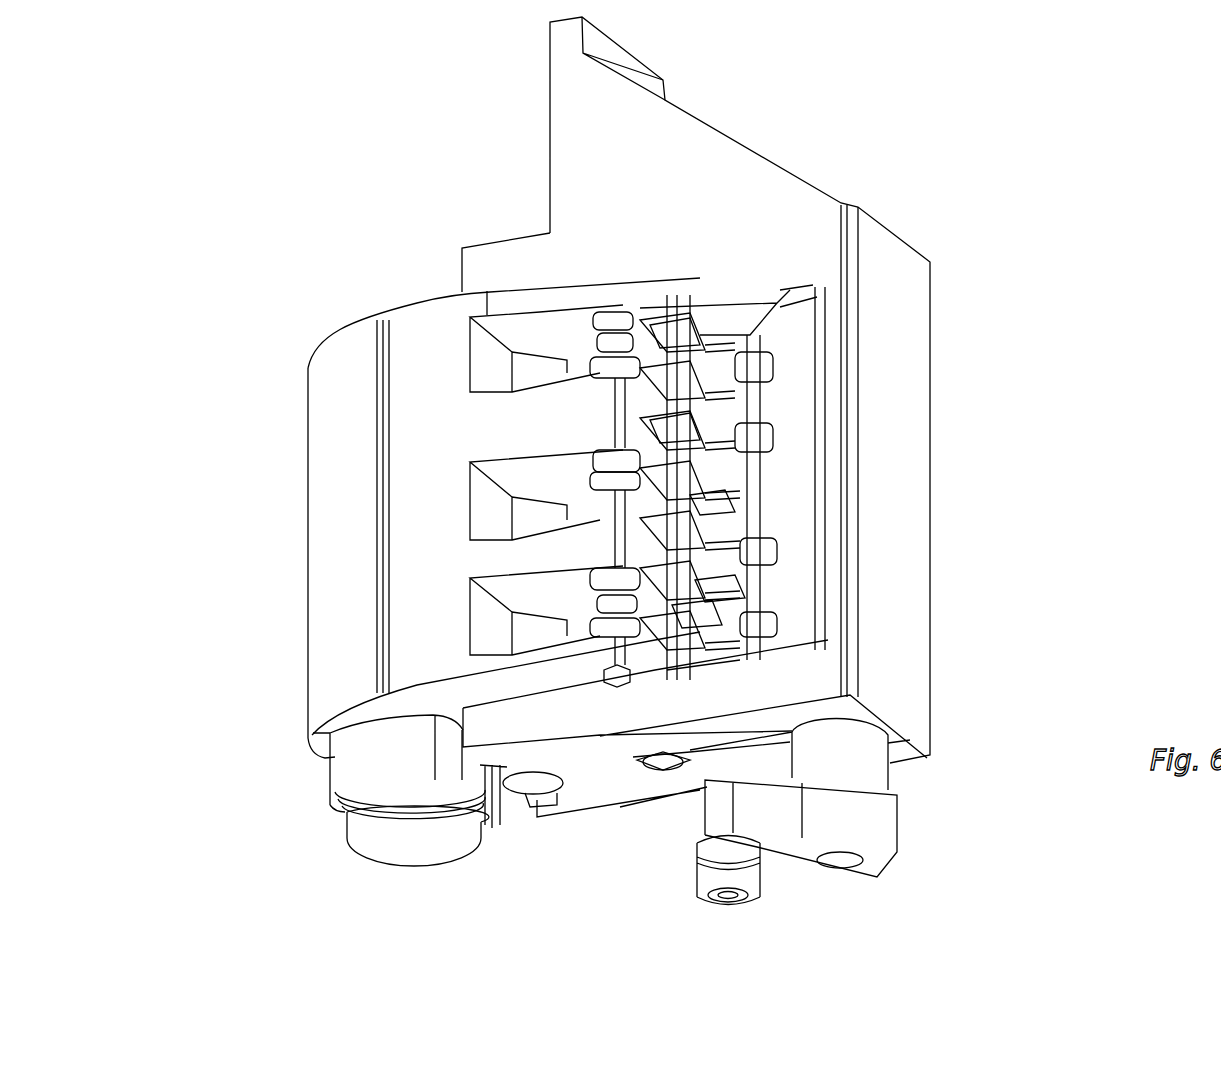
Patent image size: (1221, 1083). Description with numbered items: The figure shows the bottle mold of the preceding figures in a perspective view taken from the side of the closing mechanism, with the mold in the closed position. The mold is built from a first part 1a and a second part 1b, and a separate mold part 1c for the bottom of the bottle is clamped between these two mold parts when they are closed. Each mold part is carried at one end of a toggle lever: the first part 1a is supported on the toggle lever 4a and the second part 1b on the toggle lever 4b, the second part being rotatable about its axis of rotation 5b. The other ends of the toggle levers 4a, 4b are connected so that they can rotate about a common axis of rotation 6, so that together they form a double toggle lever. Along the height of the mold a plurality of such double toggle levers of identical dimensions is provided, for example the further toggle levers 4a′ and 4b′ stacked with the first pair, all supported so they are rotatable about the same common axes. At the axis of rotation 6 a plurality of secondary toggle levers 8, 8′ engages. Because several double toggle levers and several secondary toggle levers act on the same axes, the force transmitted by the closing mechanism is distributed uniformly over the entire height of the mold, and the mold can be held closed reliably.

The first part 1a is at (490, 830).
The second part 1b is at (352, 768).
The mold part for the bottom of the bottle 1c is at (393, 850).
The axis of rotation 5b is at (617, 687).
The axis of rotation 6 is at (665, 770).
The toggle lever 4a is at (668, 330).
The toggle lever 4a′ is at (665, 425).
The toggle lever 4b is at (620, 320).
The toggle lever 4b′ is at (623, 367).
The secondary toggle lever 8 is at (760, 366).
The secondary toggle lever 8′ is at (757, 437).